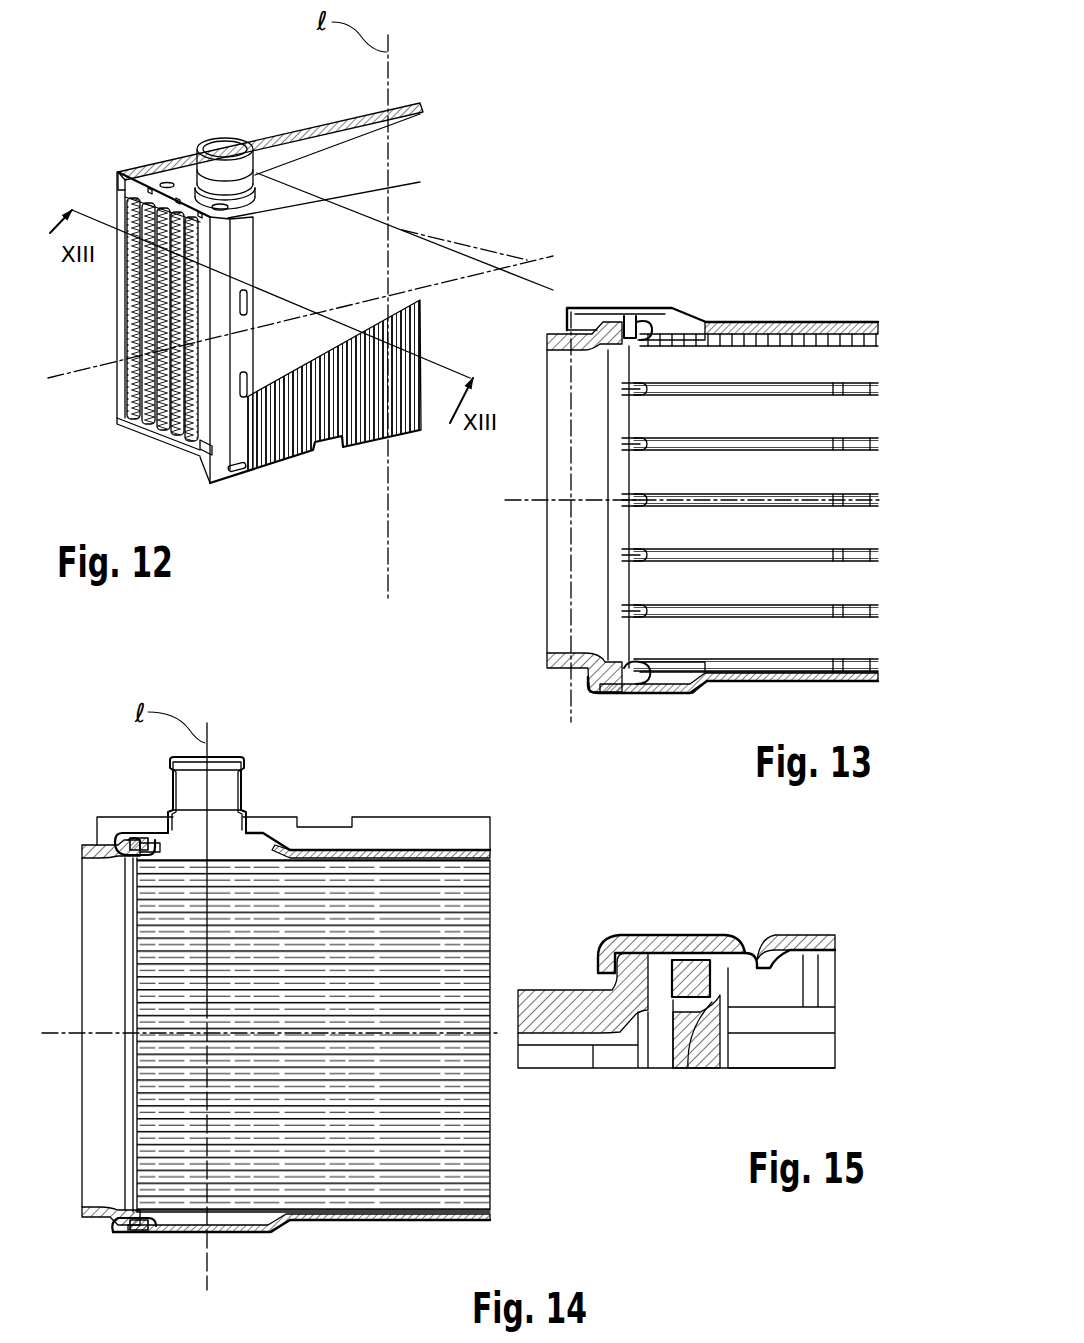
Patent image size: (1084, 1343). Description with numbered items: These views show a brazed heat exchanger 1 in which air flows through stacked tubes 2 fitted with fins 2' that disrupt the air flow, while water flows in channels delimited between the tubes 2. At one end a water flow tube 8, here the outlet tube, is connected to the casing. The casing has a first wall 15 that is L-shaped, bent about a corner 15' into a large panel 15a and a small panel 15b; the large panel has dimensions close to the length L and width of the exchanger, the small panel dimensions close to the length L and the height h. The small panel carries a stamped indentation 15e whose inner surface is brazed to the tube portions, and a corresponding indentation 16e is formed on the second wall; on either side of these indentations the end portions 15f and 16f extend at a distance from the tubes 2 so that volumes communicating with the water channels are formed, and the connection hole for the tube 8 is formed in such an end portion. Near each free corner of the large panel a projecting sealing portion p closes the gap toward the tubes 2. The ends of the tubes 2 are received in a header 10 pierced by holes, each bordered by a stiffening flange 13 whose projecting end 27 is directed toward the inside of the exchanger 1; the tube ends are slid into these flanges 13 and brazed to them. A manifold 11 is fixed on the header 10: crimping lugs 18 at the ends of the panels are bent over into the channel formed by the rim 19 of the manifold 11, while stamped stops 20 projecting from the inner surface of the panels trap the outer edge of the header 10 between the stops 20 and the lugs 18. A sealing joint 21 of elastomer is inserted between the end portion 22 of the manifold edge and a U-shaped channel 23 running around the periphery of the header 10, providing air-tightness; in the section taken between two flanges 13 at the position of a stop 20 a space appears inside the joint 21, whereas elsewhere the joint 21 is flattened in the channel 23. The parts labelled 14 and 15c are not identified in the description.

In FIG. 12, the heat exchanger 1 is at (324, 82).
In FIG. 14, the heat exchanger 1 is at (385, 753).
In FIG. 13, the air flow tubes 2 is at (808, 651).
In FIG. 14, the fins 2' is at (313, 1077).
In FIG. 12, the outlet tube 8 is at (222, 138).
In FIG. 14, the outlet tube 8 is at (247, 780).
In FIG. 12, the header 10 is at (122, 426).
In FIG. 15, the header 10 is at (693, 1053).
In FIG. 12, the manifold 11 is at (122, 388).
In FIG. 14, the manifold 11 is at (90, 845).
In FIG. 15, the manifold 11 is at (553, 1023).
In FIG. 13, the flanges 13 is at (627, 556).
In FIG. 12, the fins 14 is at (163, 370).
In FIG. 12, the first wall 15 is at (310, 372).
In FIG. 15, the first wall 15 is at (797, 1009).
In FIG. 12, the large panel 15a is at (403, 260).
In FIG. 12, the small panel 15b is at (410, 157).
In FIG. 12, the cover edge 15c is at (303, 142).
In FIG. 12, the corner 15' is at (467, 192).
In FIG. 14, the indentation 15e is at (298, 830).
In FIG. 13, the end portion 15f is at (700, 322).
In FIG. 14, the end portion 15f is at (264, 831).
In FIG. 14, the indentation 16e is at (303, 1240).
In FIG. 13, the end portion 16f is at (672, 694).
In FIG. 14, the end portion 16f is at (258, 1232).
In FIG. 12, the crimping lugs 18 is at (177, 200).
In FIG. 13, the crimping lugs 18 is at (572, 310).
In FIG. 14, the crimping lugs 18 is at (117, 837).
In FIG. 15, the crimping lugs 18 is at (617, 933).
In FIG. 13, the rim 19 is at (603, 308).
In FIG. 15, the rim 19 is at (628, 1030).
In FIG. 12, the stops 20 is at (215, 208).
In FIG. 15, the stops 20 is at (746, 947).
In FIG. 13, the sealing joint 21 is at (642, 316).
In FIG. 14, the sealing joint 21 is at (133, 840).
In FIG. 15, the sealing joint 21 is at (717, 953).
In FIG. 13, the end portion 22 is at (627, 310).
In FIG. 15, the end portion 22 is at (697, 953).
In FIG. 13, the channel 23 is at (657, 314).
In FIG. 14, the channel 23 is at (143, 840).
In FIG. 15, the channel 23 is at (705, 1009).
In FIG. 13, the projecting end 27 is at (647, 557).
In FIG. 12, the length L is at (65, 372).
In FIG. 13, the length L is at (518, 497).
In FIG. 14, the length L is at (53, 1032).
In FIG. 12, the height h is at (510, 275).
In FIG. 13, the height h is at (569, 707).
In FIG. 12, the sealing portion p is at (238, 472).